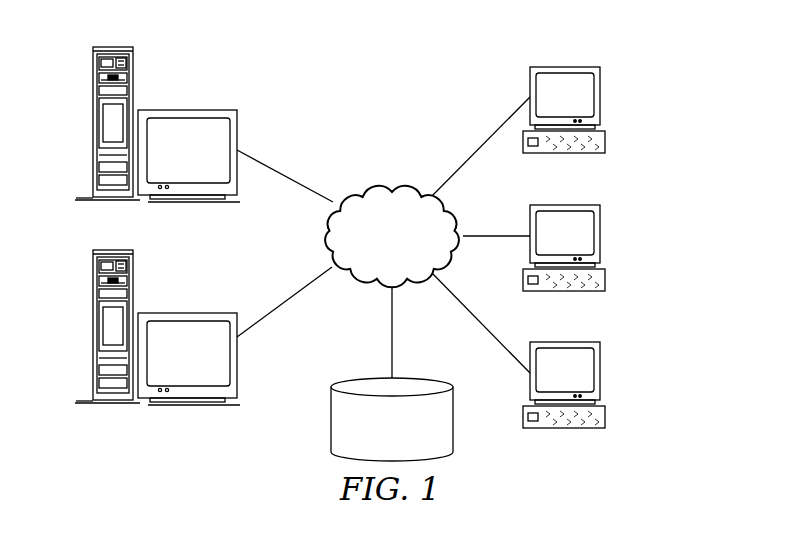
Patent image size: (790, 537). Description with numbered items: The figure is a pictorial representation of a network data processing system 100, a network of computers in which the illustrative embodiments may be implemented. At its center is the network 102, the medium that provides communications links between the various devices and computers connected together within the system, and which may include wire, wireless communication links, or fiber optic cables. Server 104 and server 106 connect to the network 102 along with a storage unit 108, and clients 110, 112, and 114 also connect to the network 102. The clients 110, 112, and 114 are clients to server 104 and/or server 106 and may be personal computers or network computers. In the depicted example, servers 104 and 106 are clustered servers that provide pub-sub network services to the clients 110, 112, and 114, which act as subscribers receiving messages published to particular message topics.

The network data processing system 100 is at (442, 73).
The network 102 is at (362, 192).
The server 104 is at (93, 124).
The server 106 is at (93, 328).
The storage unit 108 is at (330, 421).
The client 110 is at (600, 97).
The client 112 is at (600, 235).
The client 114 is at (600, 370).